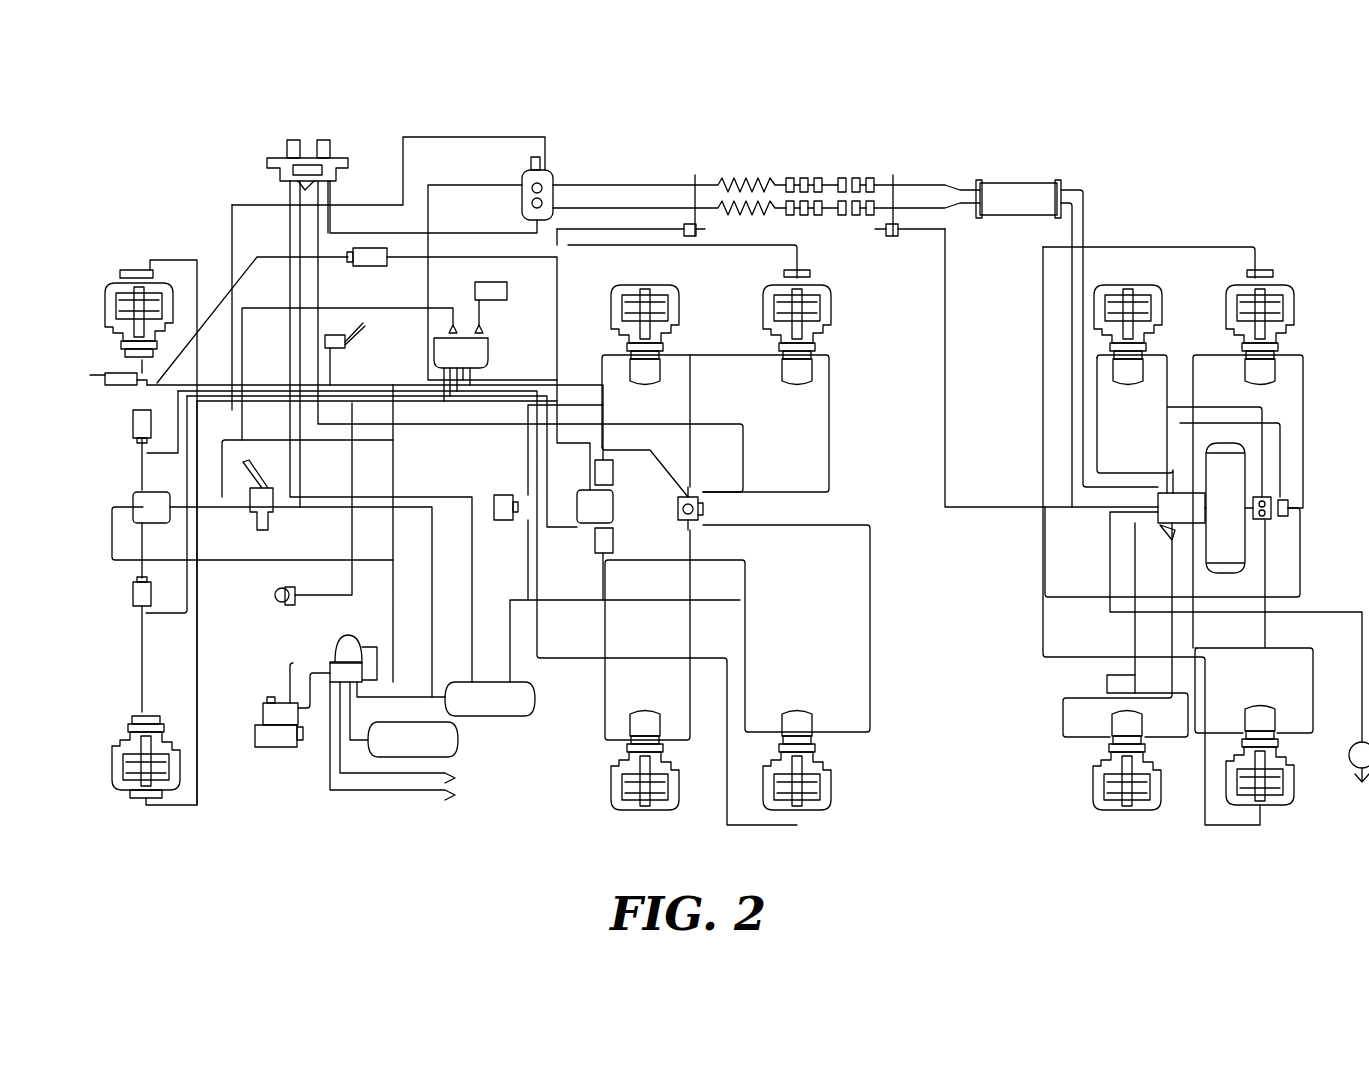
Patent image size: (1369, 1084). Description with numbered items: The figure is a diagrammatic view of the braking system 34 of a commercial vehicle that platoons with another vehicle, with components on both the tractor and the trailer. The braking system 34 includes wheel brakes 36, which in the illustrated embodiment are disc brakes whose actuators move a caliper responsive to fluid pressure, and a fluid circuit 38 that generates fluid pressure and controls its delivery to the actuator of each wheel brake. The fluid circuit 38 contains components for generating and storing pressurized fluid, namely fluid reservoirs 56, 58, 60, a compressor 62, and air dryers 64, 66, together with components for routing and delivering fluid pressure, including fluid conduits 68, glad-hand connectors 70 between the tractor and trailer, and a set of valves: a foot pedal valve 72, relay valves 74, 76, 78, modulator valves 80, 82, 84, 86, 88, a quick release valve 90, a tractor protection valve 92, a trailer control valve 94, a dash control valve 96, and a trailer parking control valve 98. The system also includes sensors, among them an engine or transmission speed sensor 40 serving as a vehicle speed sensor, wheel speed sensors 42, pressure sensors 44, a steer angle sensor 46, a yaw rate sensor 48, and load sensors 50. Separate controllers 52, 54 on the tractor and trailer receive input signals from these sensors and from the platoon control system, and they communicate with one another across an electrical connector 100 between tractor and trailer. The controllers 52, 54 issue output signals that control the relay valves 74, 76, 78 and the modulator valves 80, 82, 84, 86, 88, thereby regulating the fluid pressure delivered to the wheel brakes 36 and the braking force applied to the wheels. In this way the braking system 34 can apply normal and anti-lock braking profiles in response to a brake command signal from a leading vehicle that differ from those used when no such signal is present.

The braking system 34 is at (212, 113).
The wheel brakes 36 is at (104, 300).
The fluid circuit 38 is at (297, 810).
The engine or transmission speed sensor 40 is at (503, 300).
The wheel speed sensors 42 is at (132, 270).
The pressure sensors 44 is at (105, 377).
The steer angle sensor 46 is at (275, 603).
The yaw rate sensor 48 is at (494, 505).
The load sensors 50 is at (1107, 684).
The controller 52 is at (470, 360).
The controller 54 is at (1165, 530).
The fluid reservoir 56 is at (445, 750).
The fluid reservoir 58 is at (515, 710).
The fluid reservoir 60 is at (1228, 545).
The compressor 62 is at (270, 747).
The air dryer 64 is at (350, 668).
The air dryer 66 is at (1050, 192).
The fluid conduits 68 is at (748, 585).
The glad-hand connectors 70 is at (808, 160).
The foot pedal valve 72 is at (255, 518).
The relay valve 74 is at (133, 505).
The relay valve 76 is at (590, 520).
The relay valve 78 is at (1158, 515).
The modulator valve 80 is at (133, 426).
The modulator valve 82 is at (133, 597).
The modulator valve 84 is at (613, 475).
The modulator valve 86 is at (613, 548).
The modulator valve 88 is at (368, 248).
The quick release valve 90 is at (700, 507).
The tractor protection valve 92 is at (556, 175).
The trailer control valve 94 is at (352, 345).
The dash control valve 96 is at (305, 140).
The trailer parking control valve 98 is at (1290, 505).
The electrical connector 100 is at (700, 229).